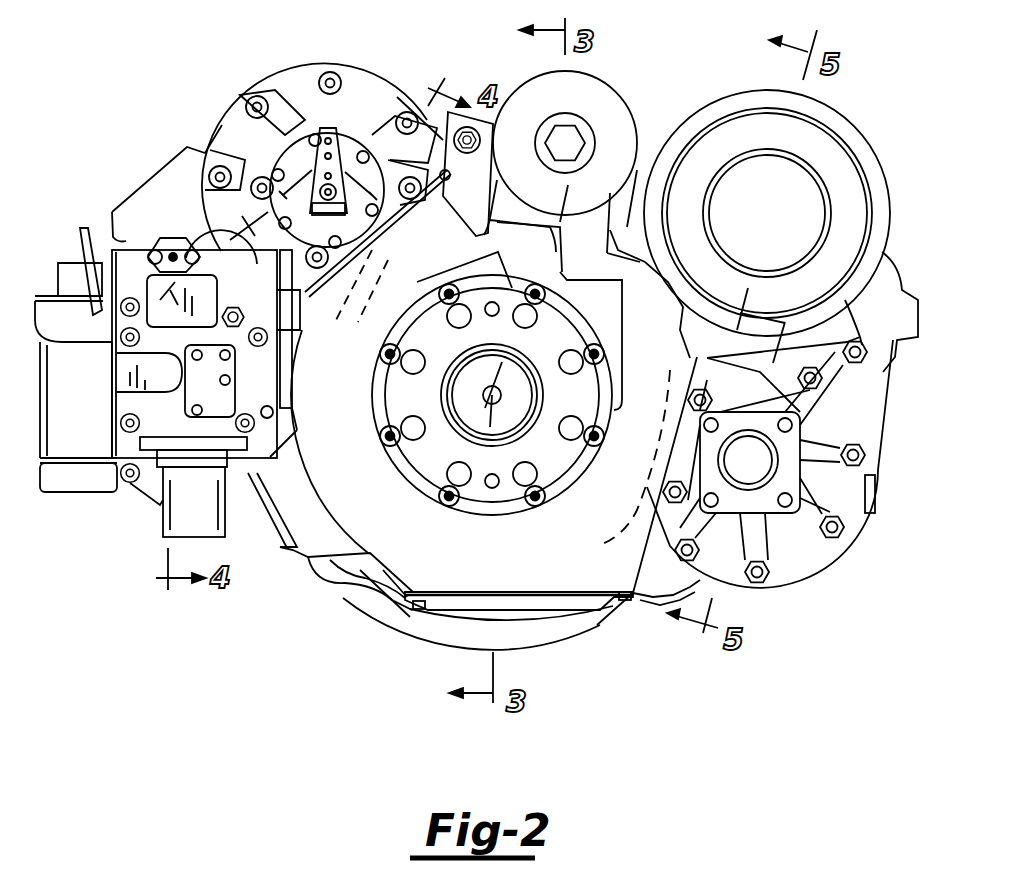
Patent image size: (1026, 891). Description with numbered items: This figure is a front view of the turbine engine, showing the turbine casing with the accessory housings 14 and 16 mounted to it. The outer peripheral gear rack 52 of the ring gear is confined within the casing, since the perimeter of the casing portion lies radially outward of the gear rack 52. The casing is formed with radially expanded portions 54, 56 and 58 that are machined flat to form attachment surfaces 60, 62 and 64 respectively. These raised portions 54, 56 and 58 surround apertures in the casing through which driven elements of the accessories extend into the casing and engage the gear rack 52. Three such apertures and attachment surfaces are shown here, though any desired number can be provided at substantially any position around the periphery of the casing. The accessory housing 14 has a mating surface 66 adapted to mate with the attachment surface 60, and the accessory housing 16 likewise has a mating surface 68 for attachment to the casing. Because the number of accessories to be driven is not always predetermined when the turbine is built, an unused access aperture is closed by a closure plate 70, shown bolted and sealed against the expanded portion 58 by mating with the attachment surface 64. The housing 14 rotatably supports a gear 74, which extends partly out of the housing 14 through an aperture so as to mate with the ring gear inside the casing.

The accessory housing 14 is at (218, 112).
The accessory housing 16 is at (901, 218).
The outer peripheral gear rack 52 is at (412, 241).
The radially expanded portion 54 is at (312, 347).
The radially expanded portion 56 is at (633, 540).
The radially expanded portion 58 is at (372, 612).
The attachment surface 60 is at (440, 198).
The attachment surface 62 is at (718, 584).
The attachment surface 64 is at (462, 592).
The mating surface 66 is at (492, 152).
The mating surface 68 is at (610, 510).
The closure plate 70 is at (533, 602).
The gear 74 is at (359, 305).